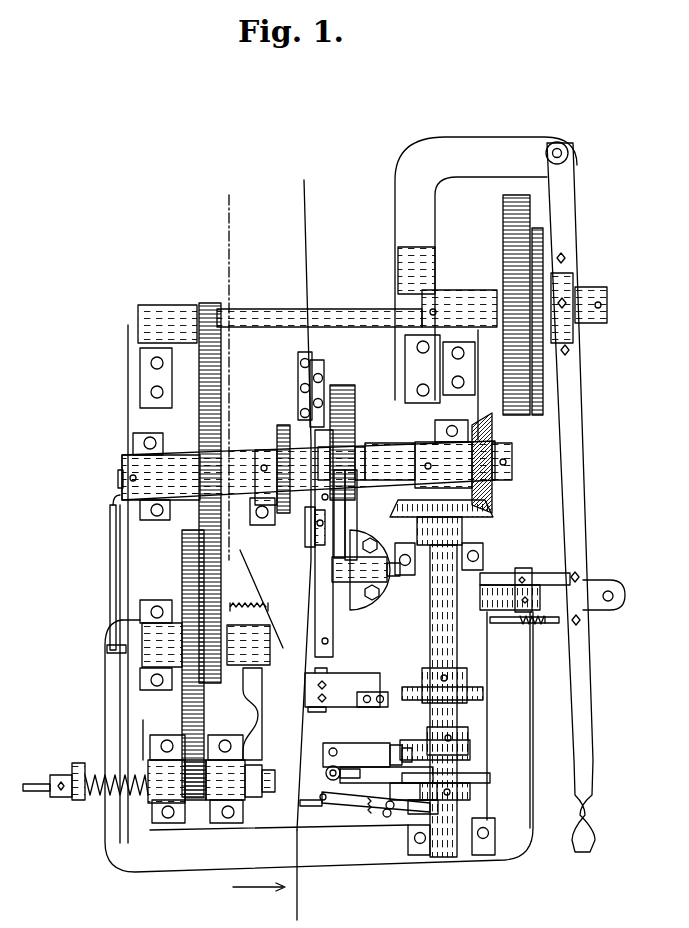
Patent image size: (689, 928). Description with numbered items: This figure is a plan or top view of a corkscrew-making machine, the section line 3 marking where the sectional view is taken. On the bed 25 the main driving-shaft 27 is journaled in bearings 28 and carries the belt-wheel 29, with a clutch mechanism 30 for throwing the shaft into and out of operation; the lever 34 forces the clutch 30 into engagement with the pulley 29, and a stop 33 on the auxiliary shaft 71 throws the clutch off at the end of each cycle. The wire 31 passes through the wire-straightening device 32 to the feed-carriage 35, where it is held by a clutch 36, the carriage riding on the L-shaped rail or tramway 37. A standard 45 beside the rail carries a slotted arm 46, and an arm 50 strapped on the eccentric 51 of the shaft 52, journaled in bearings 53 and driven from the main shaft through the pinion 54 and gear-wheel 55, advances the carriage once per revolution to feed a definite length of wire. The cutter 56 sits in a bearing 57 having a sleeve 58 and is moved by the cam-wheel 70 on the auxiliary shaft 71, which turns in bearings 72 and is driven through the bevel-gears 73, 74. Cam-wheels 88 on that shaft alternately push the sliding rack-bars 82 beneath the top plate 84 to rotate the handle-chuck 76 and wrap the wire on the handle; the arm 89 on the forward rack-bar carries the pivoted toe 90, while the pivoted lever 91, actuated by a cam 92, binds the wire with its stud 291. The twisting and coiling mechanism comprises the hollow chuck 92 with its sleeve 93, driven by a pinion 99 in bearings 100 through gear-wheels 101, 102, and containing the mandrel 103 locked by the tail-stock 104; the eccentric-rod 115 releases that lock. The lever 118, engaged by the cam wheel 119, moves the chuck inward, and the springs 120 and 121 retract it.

The section line 3 3 is at (269, 557).
The bed 25 is at (341, 514).
The main driving-shaft 27 is at (274, 308).
The bearings 28 is at (175, 306).
The belt-wheel 29 is at (505, 333).
The clutch mechanism 30 is at (576, 325).
The wire 31 is at (307, 243).
The wire-straightening device 32 is at (313, 357).
The stop 33 is at (490, 612).
The lever 34 is at (575, 712).
The feed-carriage 35 is at (306, 527).
The clutch 36 is at (318, 540).
The L-shaped rail or tramway 37 is at (315, 597).
The standard 45 is at (370, 581).
The slotted arm 46 is at (338, 584).
The arm 50 is at (357, 522).
The eccentric 51 is at (356, 432).
The shaft 52 is at (388, 452).
The bearings 53 is at (188, 445).
The pinion 54 is at (209, 303).
The gear-wheel 55 is at (222, 412).
The cutter 56 is at (371, 708).
The bearing 57 is at (342, 687).
The sleeve 58 is at (320, 713).
The cam-wheel 70 is at (484, 693).
The auxiliary shaft 71 is at (430, 640).
The bearings 72 is at (464, 552).
The bevel-gear 73 is at (494, 511).
The bevel-gear 74 is at (494, 494).
The handle-chuck 76 is at (325, 774).
The sliding rack-bars 82 is at (404, 752).
The top plate 84 is at (356, 755).
The cam-wheels 88 is at (470, 752).
The arm 89 is at (394, 745).
The pivoted toe 90 is at (388, 783).
The pivoted lever 91 is at (375, 809).
The hollow chuck 92 is at (150, 792).
The sleeve 93 is at (256, 796).
The pinion 99 is at (198, 800).
The bearings 100 is at (165, 824).
The gear-wheel 101 is at (182, 710).
The gear-wheel 102 is at (223, 688).
The mandrel 103 is at (34, 784).
The tail-stock 104 is at (64, 773).
The eccentric-rod 115 is at (109, 598).
The lever 118 is at (238, 718).
The cam wheel 119 is at (277, 440).
The spring 120 is at (270, 607).
The spring 121 is at (93, 797).
The stud 291 is at (309, 813).